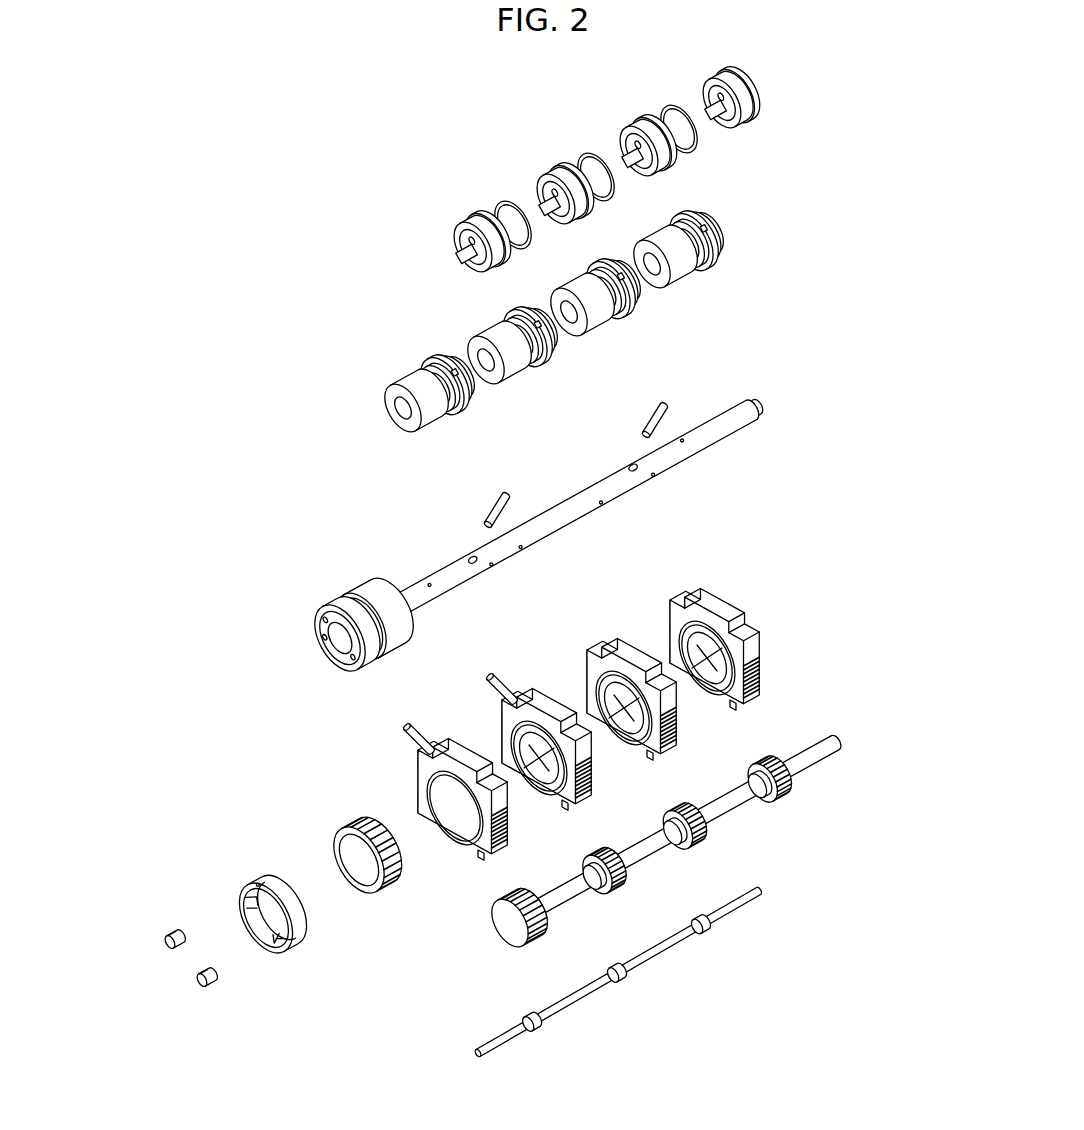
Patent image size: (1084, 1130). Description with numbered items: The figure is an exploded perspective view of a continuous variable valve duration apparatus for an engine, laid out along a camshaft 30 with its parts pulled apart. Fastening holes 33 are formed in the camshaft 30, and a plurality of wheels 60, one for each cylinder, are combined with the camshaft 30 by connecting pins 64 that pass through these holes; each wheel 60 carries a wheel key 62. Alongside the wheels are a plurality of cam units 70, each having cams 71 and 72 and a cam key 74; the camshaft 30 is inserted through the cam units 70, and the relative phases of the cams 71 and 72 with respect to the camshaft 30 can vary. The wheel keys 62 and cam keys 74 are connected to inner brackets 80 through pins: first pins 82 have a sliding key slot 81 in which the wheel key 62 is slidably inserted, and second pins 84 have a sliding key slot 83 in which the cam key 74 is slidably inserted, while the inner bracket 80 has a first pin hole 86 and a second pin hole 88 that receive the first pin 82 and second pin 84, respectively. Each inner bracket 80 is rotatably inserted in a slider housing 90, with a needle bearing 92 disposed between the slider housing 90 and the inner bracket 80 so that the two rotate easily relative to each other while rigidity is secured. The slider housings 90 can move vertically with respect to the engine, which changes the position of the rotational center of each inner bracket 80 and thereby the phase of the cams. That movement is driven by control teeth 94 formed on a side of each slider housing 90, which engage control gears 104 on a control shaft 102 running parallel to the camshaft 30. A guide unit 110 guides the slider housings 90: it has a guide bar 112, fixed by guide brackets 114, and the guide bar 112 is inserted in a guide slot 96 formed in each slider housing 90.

The camshaft 30 is at (541, 526).
The fastening holes 33 is at (632, 463).
The wheels 60 is at (618, 169).
The wheel key 62 is at (535, 222).
The connecting pins 64 is at (755, 90).
The cam units 70 is at (591, 321).
The cam 71 is at (408, 385).
The cam 72 is at (442, 368).
The cam key 74 is at (550, 320).
The inner brackets 80 is at (294, 921).
The sliding key slot 81 is at (217, 985).
The first pins 82 is at (197, 982).
The sliding key slot 83 is at (168, 935).
The second pins 84 is at (185, 932).
The first pin hole 86 is at (272, 953).
The second pin hole 88 is at (252, 898).
The slider housings 90 is at (549, 711).
The needle bearing 92 is at (352, 823).
The control teeth 94 is at (597, 790).
The guide slot 96 is at (568, 797).
The control shaft 102 is at (645, 828).
The control gears 104 is at (530, 942).
The guide unit 110 is at (648, 953).
The guide bar 112 is at (733, 910).
The guide brackets 114 is at (717, 932).